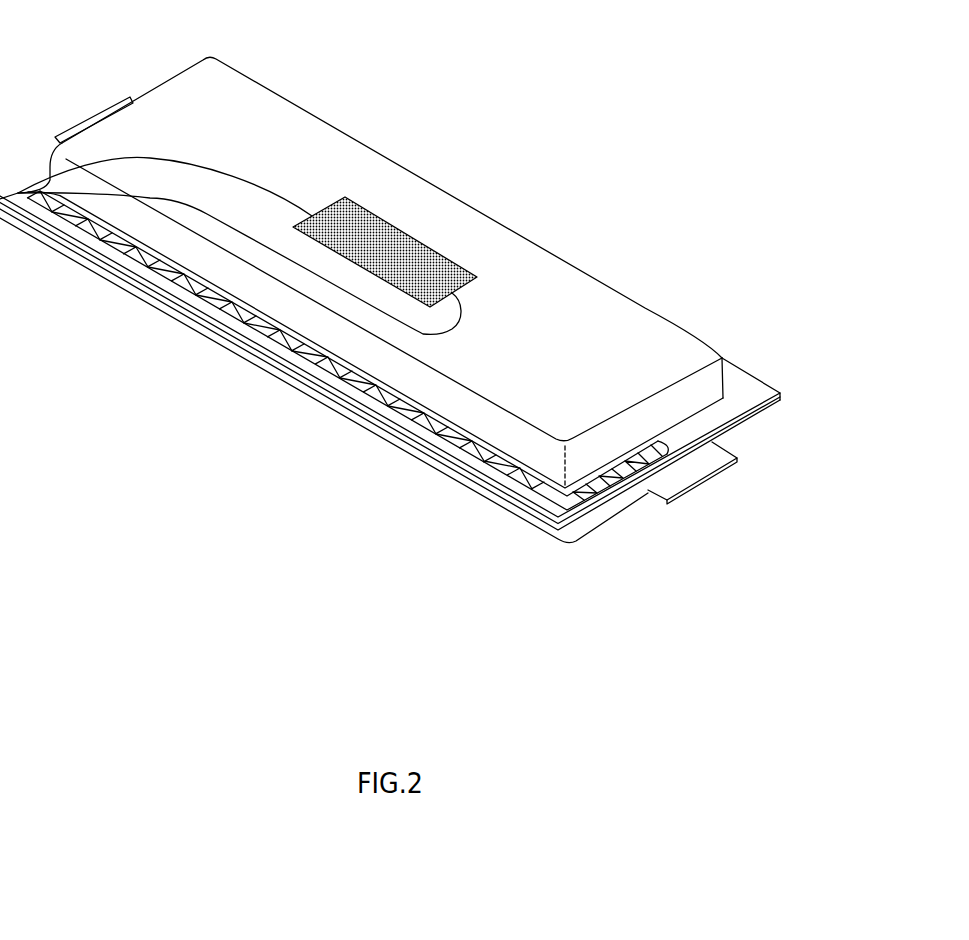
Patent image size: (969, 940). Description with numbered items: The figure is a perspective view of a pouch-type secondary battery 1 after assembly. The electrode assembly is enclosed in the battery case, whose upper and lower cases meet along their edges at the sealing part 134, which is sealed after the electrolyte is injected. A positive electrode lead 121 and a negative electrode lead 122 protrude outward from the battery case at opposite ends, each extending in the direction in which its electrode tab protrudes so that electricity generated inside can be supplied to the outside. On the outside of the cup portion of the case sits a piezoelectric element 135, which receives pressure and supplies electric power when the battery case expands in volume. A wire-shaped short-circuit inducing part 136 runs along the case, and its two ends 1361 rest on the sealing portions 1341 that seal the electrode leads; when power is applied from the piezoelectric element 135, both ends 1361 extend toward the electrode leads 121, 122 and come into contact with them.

The secondary battery 1 is at (500, 84).
The positive electrode lead 121 is at (694, 470).
The negative electrode lead 122 is at (97, 118).
The sealing part 134 is at (742, 373).
The sealing portion 1341 is at (686, 436).
The piezoelectric element 135 is at (410, 252).
The short-circuit inducing part 136 is at (474, 460).
The ends of the short-circuit inducing part 1361 is at (650, 462).